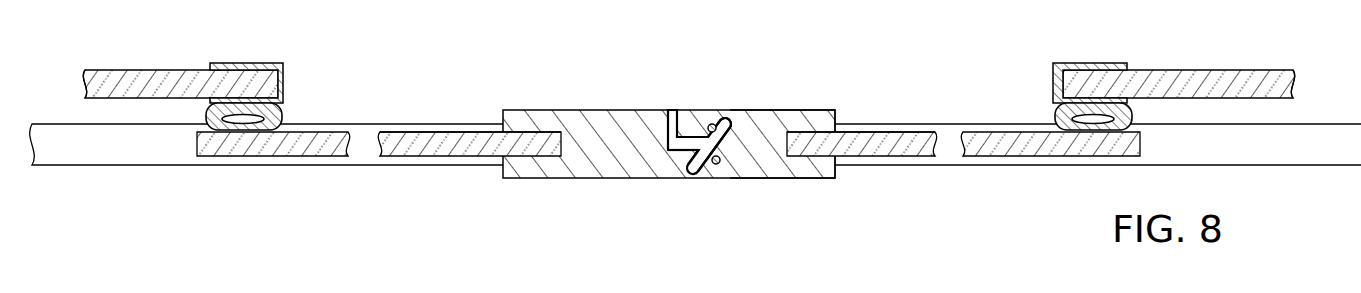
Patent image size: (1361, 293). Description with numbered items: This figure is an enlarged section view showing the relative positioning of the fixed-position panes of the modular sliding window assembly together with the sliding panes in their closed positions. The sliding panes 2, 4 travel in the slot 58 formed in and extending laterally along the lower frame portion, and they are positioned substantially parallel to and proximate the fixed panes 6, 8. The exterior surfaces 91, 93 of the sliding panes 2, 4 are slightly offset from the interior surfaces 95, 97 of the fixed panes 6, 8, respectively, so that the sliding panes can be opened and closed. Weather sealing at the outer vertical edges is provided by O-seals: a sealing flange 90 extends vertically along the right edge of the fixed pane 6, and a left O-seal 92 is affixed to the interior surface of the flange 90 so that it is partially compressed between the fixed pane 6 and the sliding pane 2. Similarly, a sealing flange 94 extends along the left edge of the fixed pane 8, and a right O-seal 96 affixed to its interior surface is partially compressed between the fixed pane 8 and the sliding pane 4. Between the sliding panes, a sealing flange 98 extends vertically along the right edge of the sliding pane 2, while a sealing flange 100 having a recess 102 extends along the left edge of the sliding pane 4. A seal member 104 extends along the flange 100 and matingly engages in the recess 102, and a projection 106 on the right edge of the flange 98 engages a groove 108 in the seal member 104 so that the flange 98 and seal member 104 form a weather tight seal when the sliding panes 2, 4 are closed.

The sliding pane 2 is at (379, 143).
The sliding pane 4 is at (963, 143).
The fixed pane 6 is at (173, 78).
The fixed pane 8 is at (1250, 76).
The slot 58 is at (115, 160).
The sealing flange 90 is at (281, 64).
The exterior surface 91 is at (421, 130).
The left O-seal 92 is at (284, 110).
The exterior surface 93 is at (888, 140).
The sealing flange 94 is at (1127, 63).
The interior surface 95 is at (117, 98).
The right O-seal 96 is at (1065, 110).
The interior surface 97 is at (1282, 100).
The sealing flange 98 is at (603, 120).
The sealing flange 100 is at (798, 118).
The recess 102 is at (730, 140).
The seal member 104 is at (688, 140).
The projection 106 is at (672, 143).
The groove 108 is at (683, 157).